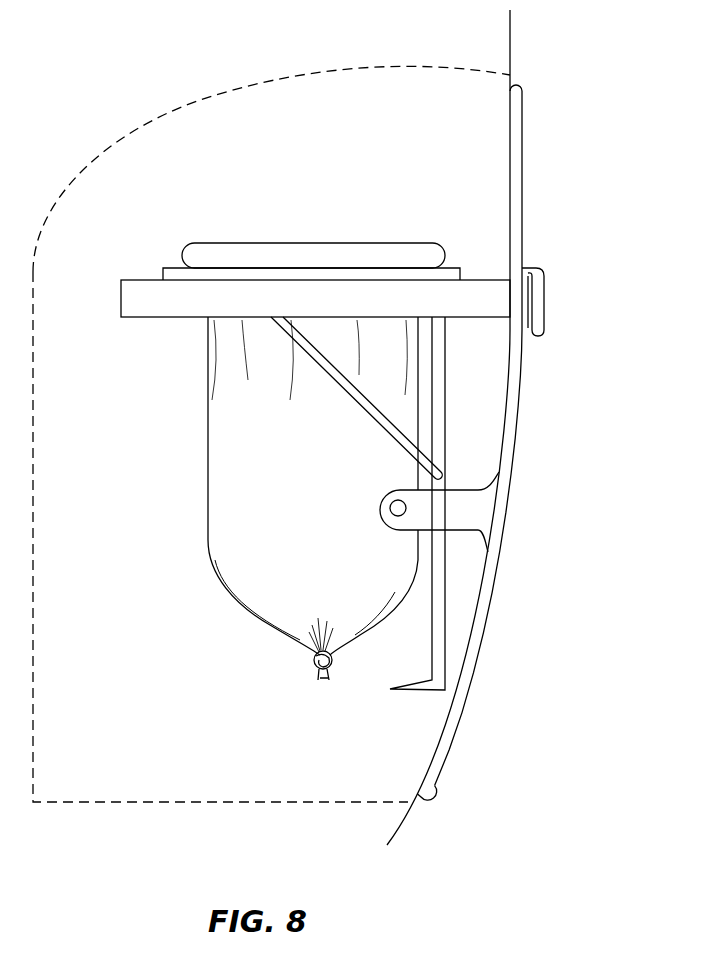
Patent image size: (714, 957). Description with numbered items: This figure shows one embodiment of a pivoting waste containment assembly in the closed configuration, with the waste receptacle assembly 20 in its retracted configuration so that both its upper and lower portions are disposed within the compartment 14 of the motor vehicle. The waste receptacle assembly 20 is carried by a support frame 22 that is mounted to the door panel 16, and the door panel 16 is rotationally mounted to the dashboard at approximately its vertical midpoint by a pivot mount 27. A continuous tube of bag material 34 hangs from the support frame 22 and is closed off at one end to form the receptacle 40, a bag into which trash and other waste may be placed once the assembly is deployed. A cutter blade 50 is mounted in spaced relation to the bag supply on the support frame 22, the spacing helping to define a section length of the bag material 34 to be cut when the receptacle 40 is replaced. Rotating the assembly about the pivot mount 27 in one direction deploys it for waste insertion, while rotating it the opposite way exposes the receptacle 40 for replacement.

The compartment 14 is at (210, 132).
The door panel 16 is at (493, 585).
The waste receptacle assembly 20 is at (403, 222).
The support frame 22 is at (476, 294).
The pivot mount 27 is at (386, 509).
The bag material 34 is at (231, 506).
The receptacle 40 is at (238, 608).
The cutter blade 50 is at (415, 690).